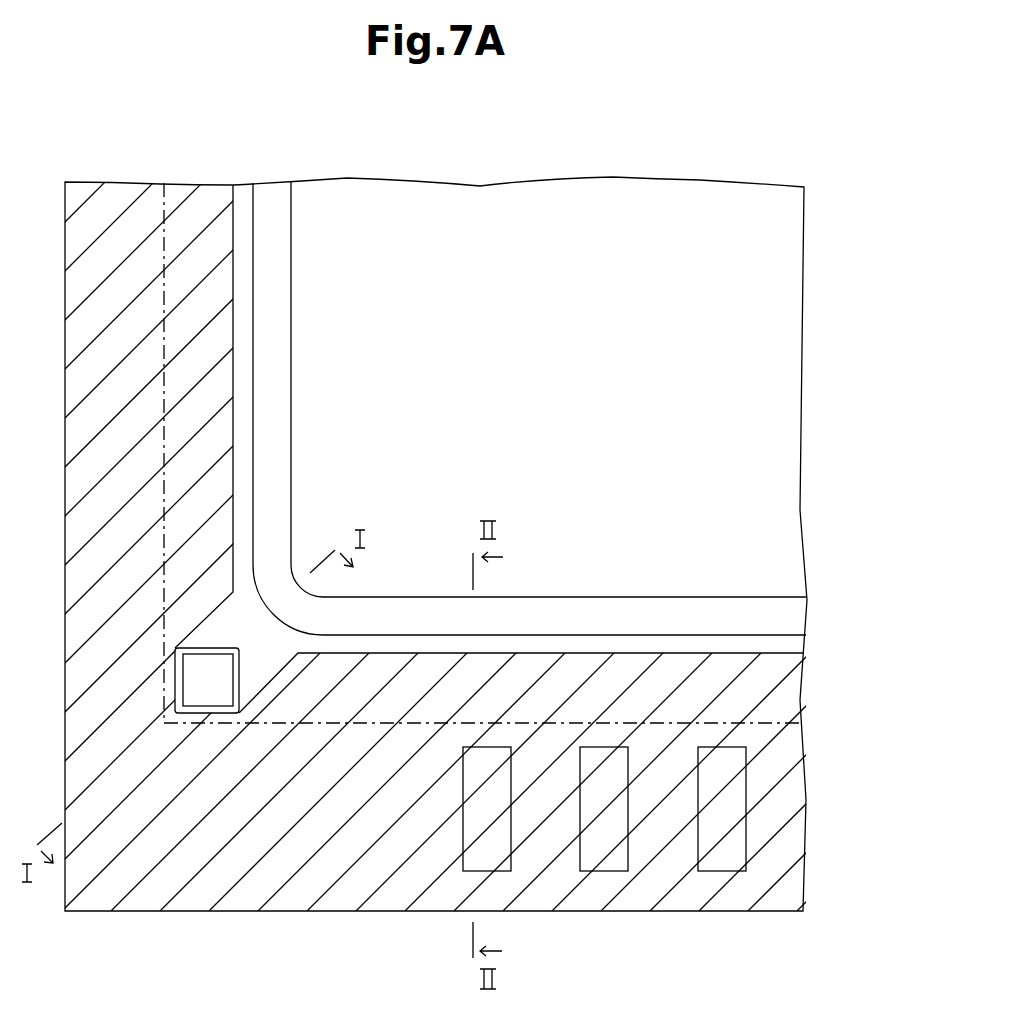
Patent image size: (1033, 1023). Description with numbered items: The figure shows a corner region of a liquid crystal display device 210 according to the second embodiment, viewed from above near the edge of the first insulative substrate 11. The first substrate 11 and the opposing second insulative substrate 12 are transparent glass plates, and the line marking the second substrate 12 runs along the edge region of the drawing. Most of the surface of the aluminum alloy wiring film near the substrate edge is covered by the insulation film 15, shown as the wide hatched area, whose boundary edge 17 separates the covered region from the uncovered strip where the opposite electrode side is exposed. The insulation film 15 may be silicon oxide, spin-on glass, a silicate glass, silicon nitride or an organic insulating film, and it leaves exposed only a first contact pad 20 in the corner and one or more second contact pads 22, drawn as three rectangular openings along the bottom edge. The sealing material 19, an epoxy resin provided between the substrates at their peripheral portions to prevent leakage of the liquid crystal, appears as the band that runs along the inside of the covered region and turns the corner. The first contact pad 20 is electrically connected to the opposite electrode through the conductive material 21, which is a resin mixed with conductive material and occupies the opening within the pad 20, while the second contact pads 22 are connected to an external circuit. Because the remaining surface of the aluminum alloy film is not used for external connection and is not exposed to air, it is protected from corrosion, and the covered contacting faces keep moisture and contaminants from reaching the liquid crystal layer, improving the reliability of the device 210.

The liquid crystal display device 210 is at (654, 114).
The first insulative substrate 11 is at (133, 913).
The second insulative substrate 12 is at (164, 204).
The insulation film 15 is at (240, 882).
The opposite electrode 17 is at (233, 200).
The sealing material 19 is at (275, 252).
The first contact pad 20 is at (218, 677).
The conductive material 21 is at (229, 648).
The second contact pads 22 is at (730, 760).